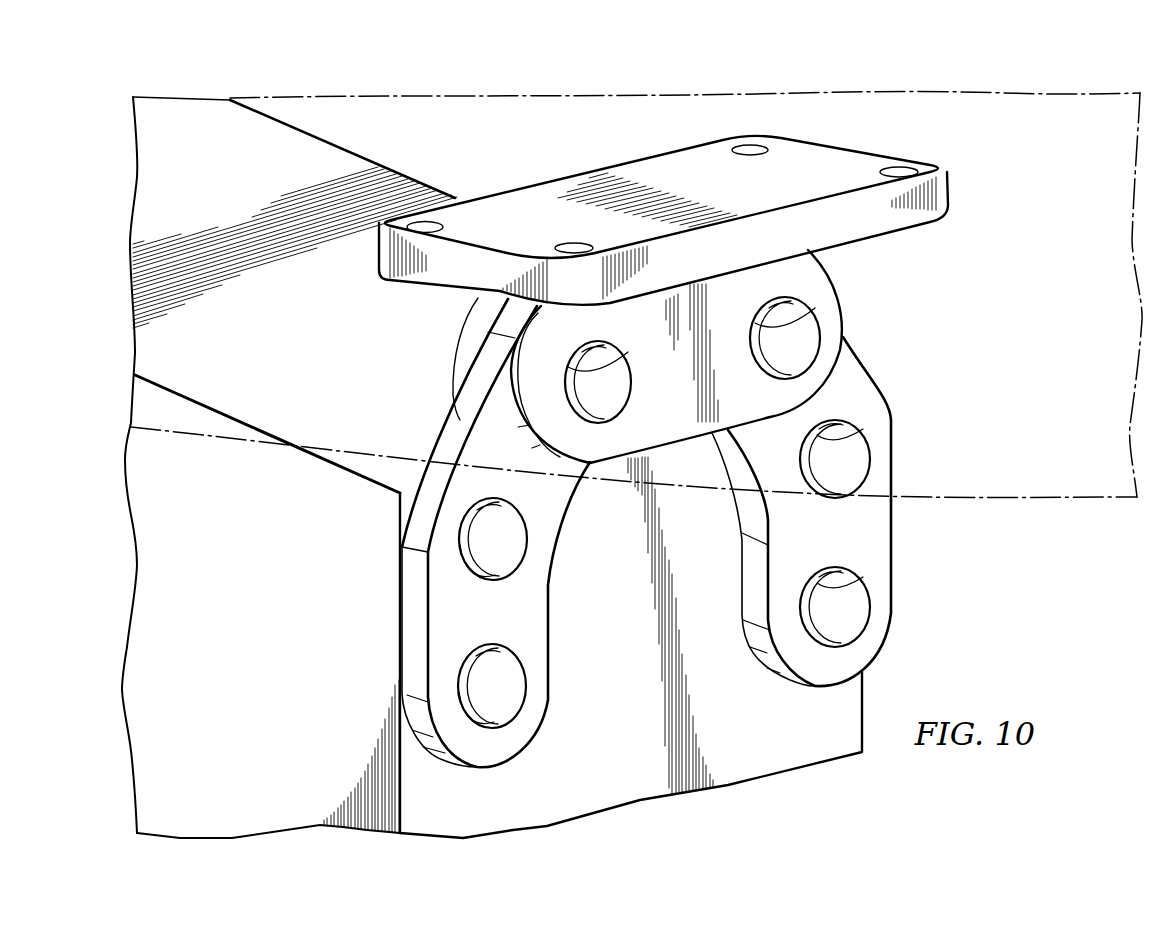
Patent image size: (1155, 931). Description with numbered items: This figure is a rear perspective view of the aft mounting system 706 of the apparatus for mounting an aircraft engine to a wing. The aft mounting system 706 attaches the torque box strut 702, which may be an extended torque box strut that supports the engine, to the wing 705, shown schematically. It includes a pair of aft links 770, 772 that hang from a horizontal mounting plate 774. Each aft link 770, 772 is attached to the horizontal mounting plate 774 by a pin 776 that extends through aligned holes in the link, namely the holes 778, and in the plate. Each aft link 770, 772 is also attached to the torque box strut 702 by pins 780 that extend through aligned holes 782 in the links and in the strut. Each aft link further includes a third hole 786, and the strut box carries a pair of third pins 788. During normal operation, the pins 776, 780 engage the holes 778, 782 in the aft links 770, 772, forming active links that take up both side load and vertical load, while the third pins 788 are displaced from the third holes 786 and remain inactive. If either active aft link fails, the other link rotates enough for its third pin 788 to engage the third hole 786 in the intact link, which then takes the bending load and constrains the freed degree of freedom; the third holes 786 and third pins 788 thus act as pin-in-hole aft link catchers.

The torque box strut 702 is at (760, 767).
The wing 705 is at (1066, 93).
The aft mounting system 706 is at (352, 83).
The aft link 770 is at (538, 625).
The aft link 772 is at (880, 535).
The horizontal mounting plate 774 is at (655, 178).
The pin 776 is at (617, 394).
The hole 778 is at (613, 360).
The pin 780 is at (508, 548).
The hole 782 is at (490, 573).
The third hole 786 is at (510, 697).
The third pin 788 is at (497, 722).